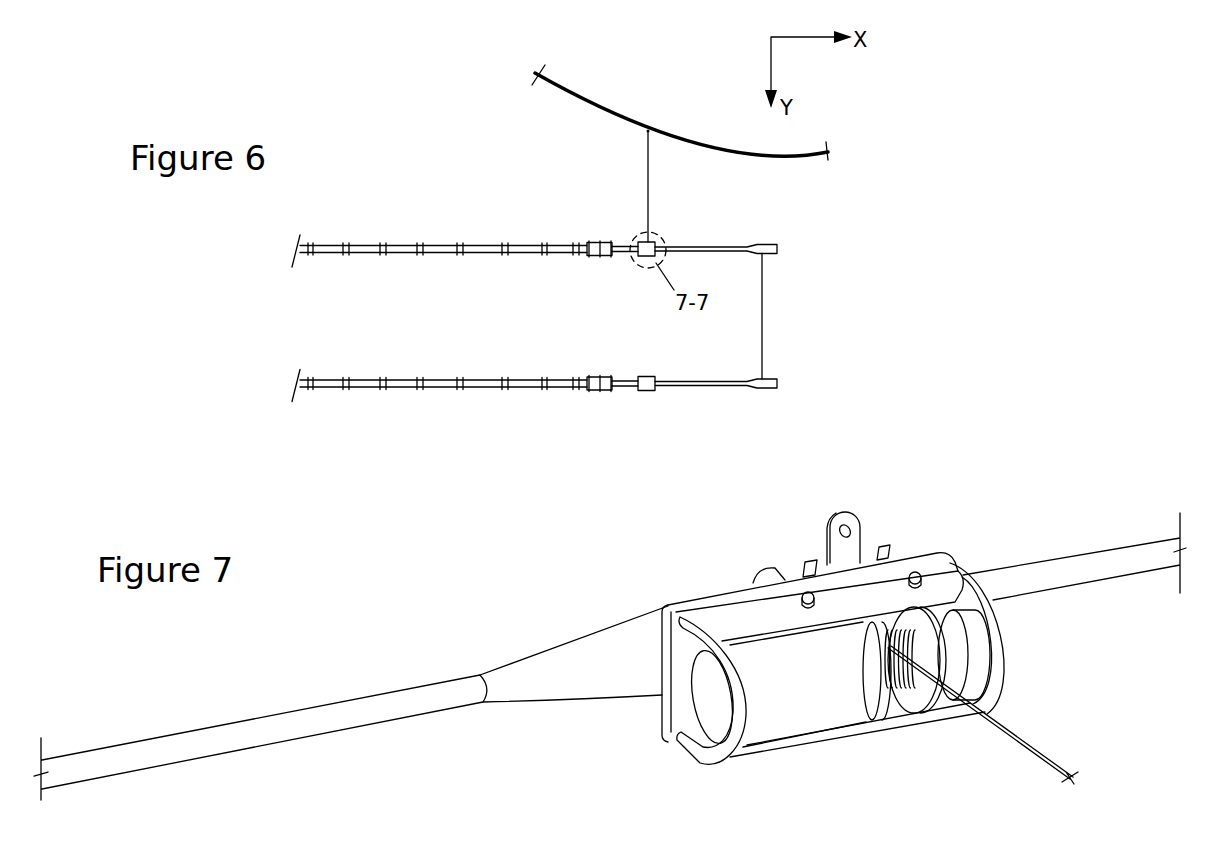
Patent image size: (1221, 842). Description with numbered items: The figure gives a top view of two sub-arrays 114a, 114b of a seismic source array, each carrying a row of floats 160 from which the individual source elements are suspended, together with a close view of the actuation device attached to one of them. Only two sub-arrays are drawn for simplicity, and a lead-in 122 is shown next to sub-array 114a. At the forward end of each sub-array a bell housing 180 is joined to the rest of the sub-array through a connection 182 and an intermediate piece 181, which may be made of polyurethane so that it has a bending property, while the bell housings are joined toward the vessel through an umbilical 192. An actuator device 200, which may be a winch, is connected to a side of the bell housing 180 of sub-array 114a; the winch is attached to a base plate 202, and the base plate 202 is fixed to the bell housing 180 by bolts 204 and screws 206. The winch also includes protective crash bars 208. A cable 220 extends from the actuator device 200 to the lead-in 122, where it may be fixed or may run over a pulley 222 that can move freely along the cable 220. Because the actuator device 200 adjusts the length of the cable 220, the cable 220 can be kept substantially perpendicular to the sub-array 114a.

In FIG. 6, the sub-array 114a is at (336, 264).
In FIG. 6, the sub-array 114b is at (340, 392).
In FIG. 6, the lead-in 122 is at (580, 103).
In FIG. 6, the float 160 is at (398, 247).
In FIG. 6, the bell housing 180 is at (631, 246).
In FIG. 7, the bell housing 180 is at (859, 500).
In FIG. 7, the intermediate piece 181 is at (588, 662).
In FIG. 7, the connection 182 is at (292, 728).
In FIG. 6, the umbilical 192 is at (711, 248).
In FIG. 6, the actuator device 200 is at (658, 239).
In FIG. 7, the actuator device 200 is at (837, 697).
In FIG. 7, the base plate 202 is at (873, 553).
In FIG. 7, the bolts 204 is at (770, 570).
In FIG. 7, the screws 206 is at (802, 562).
In FIG. 7, the protective crash bars 208 is at (1000, 662).
In FIG. 6, the cable 220 is at (648, 173).
In FIG. 7, the cable 220 is at (1030, 748).
In FIG. 6, the pulley 222 is at (650, 131).